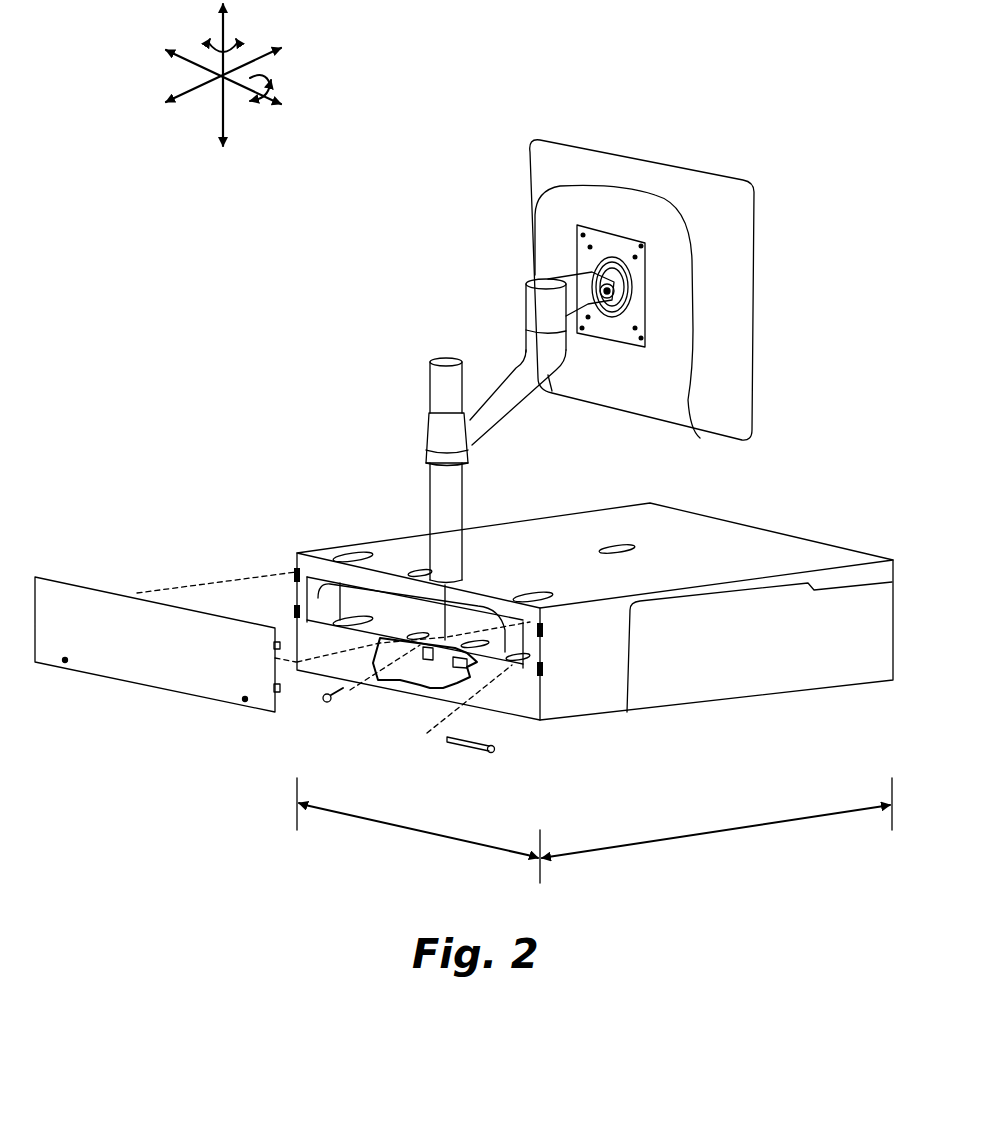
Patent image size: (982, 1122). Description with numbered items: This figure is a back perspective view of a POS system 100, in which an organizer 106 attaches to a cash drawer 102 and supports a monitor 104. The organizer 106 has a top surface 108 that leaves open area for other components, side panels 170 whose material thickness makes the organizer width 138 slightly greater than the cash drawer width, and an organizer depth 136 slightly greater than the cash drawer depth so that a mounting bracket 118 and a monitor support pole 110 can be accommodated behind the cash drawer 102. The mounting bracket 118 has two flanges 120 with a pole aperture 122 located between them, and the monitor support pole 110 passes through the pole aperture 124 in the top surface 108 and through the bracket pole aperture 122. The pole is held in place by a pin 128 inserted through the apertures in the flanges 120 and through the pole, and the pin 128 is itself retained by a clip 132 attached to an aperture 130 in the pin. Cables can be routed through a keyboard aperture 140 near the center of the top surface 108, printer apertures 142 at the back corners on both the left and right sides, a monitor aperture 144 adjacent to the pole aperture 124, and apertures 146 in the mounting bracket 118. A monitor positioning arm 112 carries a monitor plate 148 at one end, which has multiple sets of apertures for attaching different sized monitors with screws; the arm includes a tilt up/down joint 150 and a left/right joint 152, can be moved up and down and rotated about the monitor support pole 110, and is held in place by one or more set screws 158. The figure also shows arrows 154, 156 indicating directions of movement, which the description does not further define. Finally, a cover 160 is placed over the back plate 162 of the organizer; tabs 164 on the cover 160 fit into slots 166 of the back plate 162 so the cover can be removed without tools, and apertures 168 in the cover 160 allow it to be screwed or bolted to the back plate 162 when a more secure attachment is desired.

The POS system 100 is at (230, 297).
The cash drawer 102 is at (852, 637).
The monitor 104 is at (582, 148).
The organizer 106 is at (812, 531).
The top surface 108 is at (697, 525).
The monitor support pole 110 is at (437, 383).
The monitor positioning arm 112 is at (500, 358).
The mounting bracket 118 is at (493, 653).
The flanges 120 is at (400, 655).
The pole aperture 122 is at (410, 660).
The pole aperture 124 is at (463, 580).
The pin 128 is at (470, 750).
The aperture 130 is at (449, 748).
The clip 132 is at (320, 697).
The organizer depth 136 is at (743, 830).
The organizer width 138 is at (430, 833).
The keyboard aperture 140 is at (603, 546).
The printer apertures 142 is at (355, 552).
The monitor aperture 144 is at (420, 572).
The apertures 146 is at (425, 632).
The monitor plate 148 is at (615, 255).
The tilt up/down joint 150 is at (612, 292).
The left/right joint 152 is at (545, 282).
The rotation direction 154 is at (258, 76).
The rotation direction 156 is at (214, 48).
The set screws 158 is at (437, 447).
The cover 160 is at (145, 670).
The back plate 162 is at (517, 710).
The tabs 164 is at (273, 645).
The slots 166 is at (296, 617).
The apertures 168 is at (63, 663).
The side panels 170 is at (590, 688).